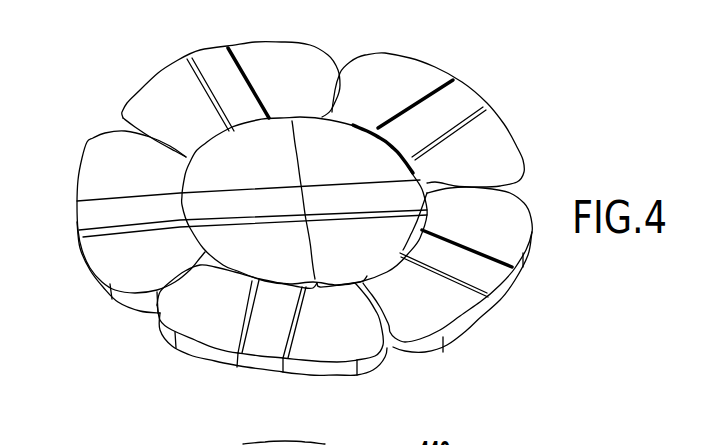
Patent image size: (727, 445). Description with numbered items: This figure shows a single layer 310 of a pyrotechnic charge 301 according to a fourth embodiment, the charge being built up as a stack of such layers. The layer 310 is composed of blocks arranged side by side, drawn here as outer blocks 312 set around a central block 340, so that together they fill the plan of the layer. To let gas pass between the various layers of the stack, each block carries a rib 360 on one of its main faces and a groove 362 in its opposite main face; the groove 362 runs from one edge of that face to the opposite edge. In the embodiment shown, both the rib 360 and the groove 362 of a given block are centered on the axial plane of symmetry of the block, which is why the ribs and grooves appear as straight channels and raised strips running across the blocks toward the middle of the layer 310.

The pyrotechnic charge 301 is at (515, 56).
The layer 310 is at (506, 122).
The lobes 312 is at (153, 99).
The central portion 340 is at (345, 150).
The rib 360 is at (460, 104).
The groove 362 is at (263, 380).